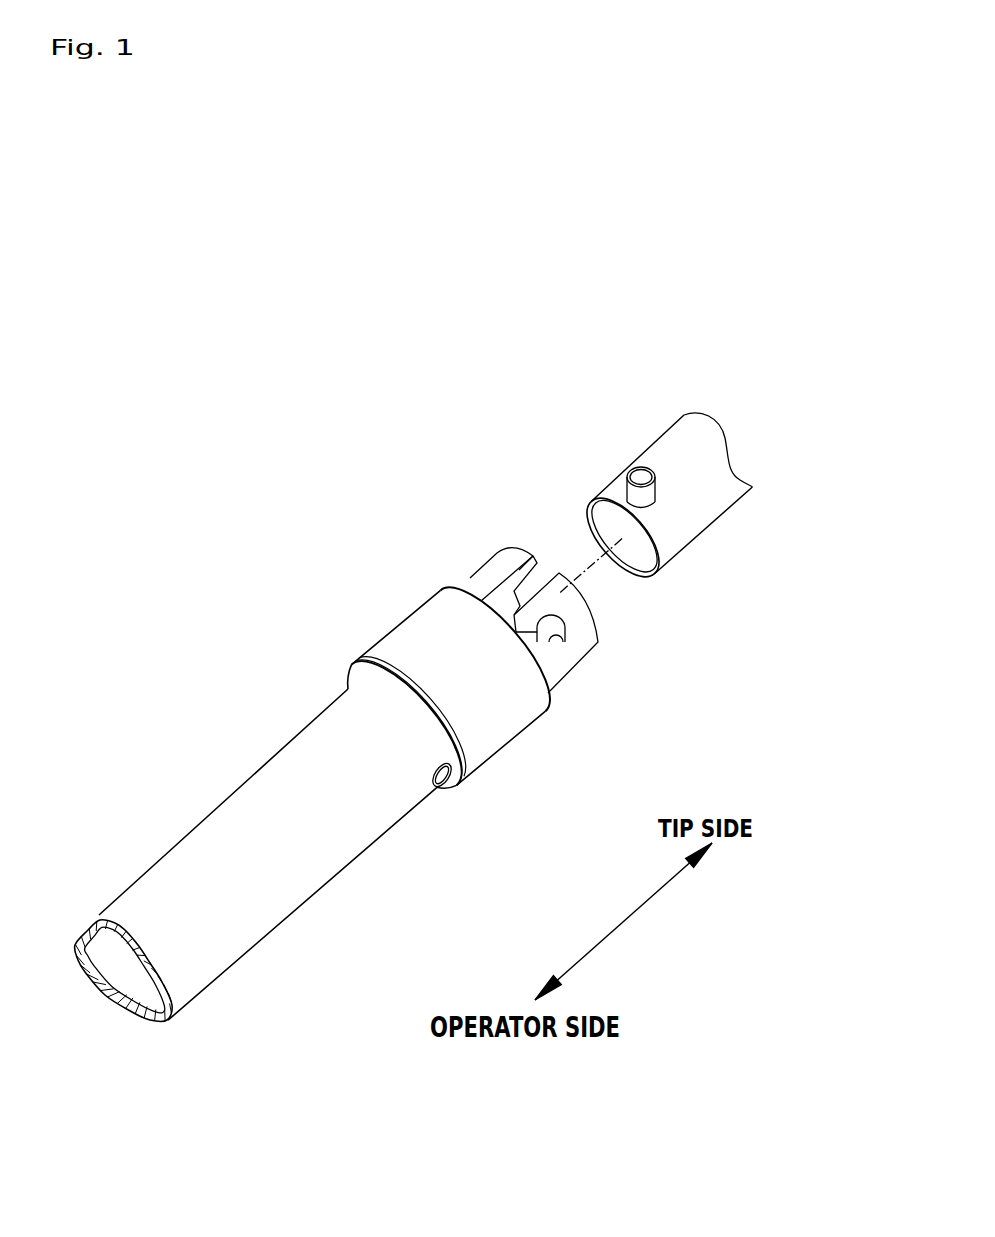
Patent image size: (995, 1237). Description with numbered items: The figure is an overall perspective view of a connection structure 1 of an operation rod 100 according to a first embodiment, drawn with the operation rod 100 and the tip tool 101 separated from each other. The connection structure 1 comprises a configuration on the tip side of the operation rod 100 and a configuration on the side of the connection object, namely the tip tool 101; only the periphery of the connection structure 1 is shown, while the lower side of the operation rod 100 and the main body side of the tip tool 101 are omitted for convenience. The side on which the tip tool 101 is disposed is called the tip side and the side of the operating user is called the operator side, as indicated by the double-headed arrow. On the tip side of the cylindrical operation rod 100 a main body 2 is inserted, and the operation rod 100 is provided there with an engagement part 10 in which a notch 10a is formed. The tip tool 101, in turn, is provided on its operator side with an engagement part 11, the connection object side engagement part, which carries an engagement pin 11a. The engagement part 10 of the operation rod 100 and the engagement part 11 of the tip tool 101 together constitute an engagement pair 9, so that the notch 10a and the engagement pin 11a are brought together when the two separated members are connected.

The connection structure 1 is at (362, 480).
The main body 2 is at (570, 677).
The engagement pair 9 is at (425, 542).
The engagement part 10 is at (448, 582).
The notch 10a is at (557, 643).
The engagement part 11 is at (565, 512).
The engagement pin 11a is at (660, 488).
The operation rod 100 is at (253, 790).
The tip tool 101 is at (677, 437).